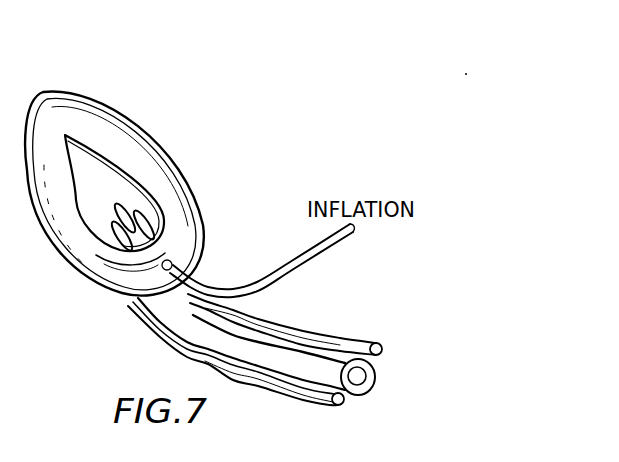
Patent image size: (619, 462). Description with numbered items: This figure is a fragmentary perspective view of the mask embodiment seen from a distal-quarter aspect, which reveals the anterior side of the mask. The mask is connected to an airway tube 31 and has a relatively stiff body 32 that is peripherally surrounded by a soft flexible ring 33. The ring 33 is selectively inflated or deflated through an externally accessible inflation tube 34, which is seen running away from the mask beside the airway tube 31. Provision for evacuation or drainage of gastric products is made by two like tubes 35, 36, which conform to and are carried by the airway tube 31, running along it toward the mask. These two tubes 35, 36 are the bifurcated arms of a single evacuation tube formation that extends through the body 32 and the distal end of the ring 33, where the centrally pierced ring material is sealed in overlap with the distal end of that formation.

The airway tube 31 is at (265, 352).
The relatively stiff body 32 is at (113, 180).
The soft flexible ring 33 is at (165, 185).
The inflation tube 34 is at (258, 278).
The tube 35 is at (361, 346).
The tube 36 is at (312, 397).